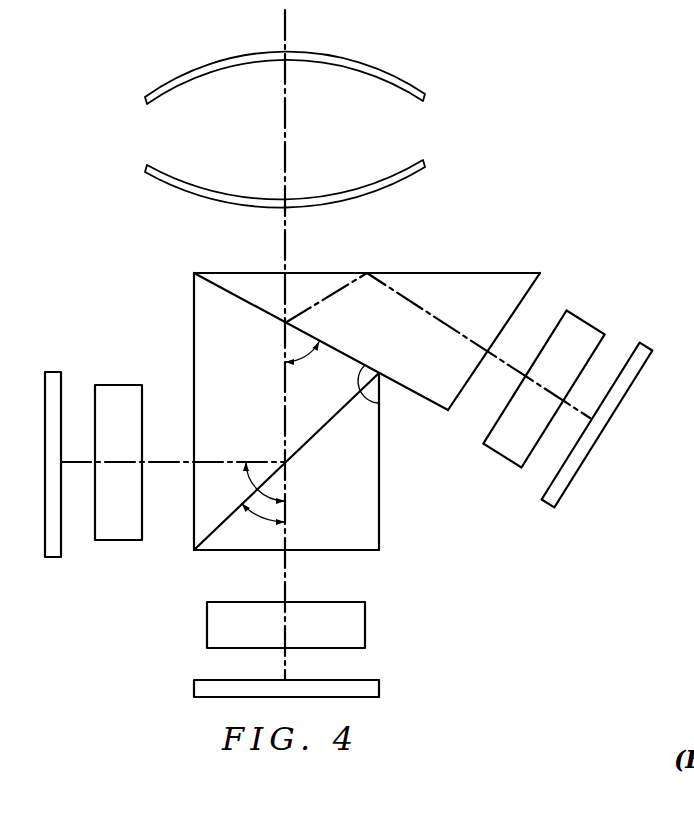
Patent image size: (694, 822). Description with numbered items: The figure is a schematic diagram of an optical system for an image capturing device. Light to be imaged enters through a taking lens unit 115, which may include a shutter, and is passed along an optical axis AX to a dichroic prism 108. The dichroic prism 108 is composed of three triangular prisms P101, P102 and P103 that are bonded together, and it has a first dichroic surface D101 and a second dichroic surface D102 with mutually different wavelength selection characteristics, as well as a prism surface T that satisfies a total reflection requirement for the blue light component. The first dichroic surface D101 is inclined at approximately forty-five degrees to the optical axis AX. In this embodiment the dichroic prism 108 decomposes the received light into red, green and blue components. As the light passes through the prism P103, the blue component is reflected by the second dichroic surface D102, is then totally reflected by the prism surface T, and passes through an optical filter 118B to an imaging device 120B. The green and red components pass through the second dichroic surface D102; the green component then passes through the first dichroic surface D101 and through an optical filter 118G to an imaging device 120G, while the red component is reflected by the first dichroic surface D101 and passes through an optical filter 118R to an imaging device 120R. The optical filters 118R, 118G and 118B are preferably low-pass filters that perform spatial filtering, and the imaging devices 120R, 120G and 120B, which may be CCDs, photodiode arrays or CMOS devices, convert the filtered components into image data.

The optical axis AX is at (283, 21).
The taking lens unit 115 is at (142, 135).
The dichroic prism 108 is at (328, 376).
The triangular prism P101 is at (372, 528).
The triangular prism P102 is at (194, 336).
The triangular prism P103 is at (253, 283).
The prism surface T is at (330, 273).
The first dichroic surface D101 is at (317, 432).
The second dichroic surface D102 is at (379, 403).
The optical filter 118R is at (118, 542).
The imaging device 120R is at (55, 558).
The optical filter 118G is at (207, 624).
The imaging device 120G is at (195, 690).
The optical filter 118B is at (590, 313).
The imaging device 120B is at (650, 344).